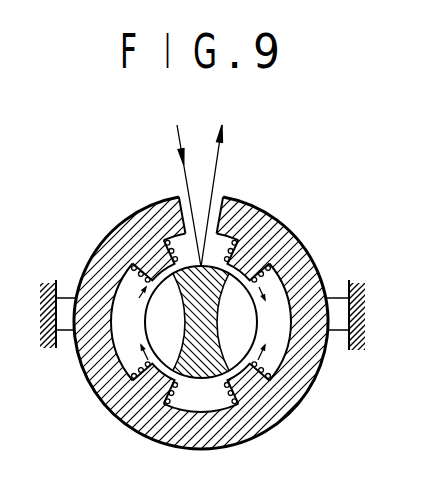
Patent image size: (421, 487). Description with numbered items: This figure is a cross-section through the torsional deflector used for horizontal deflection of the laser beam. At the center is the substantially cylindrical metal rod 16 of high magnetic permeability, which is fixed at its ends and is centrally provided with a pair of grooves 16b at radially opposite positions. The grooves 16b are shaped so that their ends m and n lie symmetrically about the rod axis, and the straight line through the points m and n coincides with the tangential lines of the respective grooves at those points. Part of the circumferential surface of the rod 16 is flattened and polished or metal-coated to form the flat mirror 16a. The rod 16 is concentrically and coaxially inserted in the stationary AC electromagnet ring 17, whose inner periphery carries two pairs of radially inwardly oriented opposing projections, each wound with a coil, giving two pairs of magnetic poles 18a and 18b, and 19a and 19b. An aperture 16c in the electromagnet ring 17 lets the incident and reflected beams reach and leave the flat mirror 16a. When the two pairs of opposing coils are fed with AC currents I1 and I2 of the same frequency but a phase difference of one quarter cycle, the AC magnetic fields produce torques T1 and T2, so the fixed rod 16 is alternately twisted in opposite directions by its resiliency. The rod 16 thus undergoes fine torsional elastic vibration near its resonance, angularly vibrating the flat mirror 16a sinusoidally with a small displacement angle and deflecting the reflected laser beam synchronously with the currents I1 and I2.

The metal rod 16 is at (258, 333).
The flat mirror 16a is at (253, 253).
The grooves 16b is at (93, 352).
The aperture 16c is at (223, 203).
The AC electromagnet ring 17 is at (323, 266).
The magnetic pole 18a is at (152, 258).
The magnetic pole 18b is at (243, 370).
The magnetic pole 19a is at (272, 240).
The magnetic pole 19b is at (157, 388).
The groove end point m is at (172, 366).
The groove end point n is at (234, 276).
The AC current I1 is at (186, 248).
The AC current I2 is at (192, 398).
The torque T1 is at (201, 328).
The torque T2 is at (205, 327).